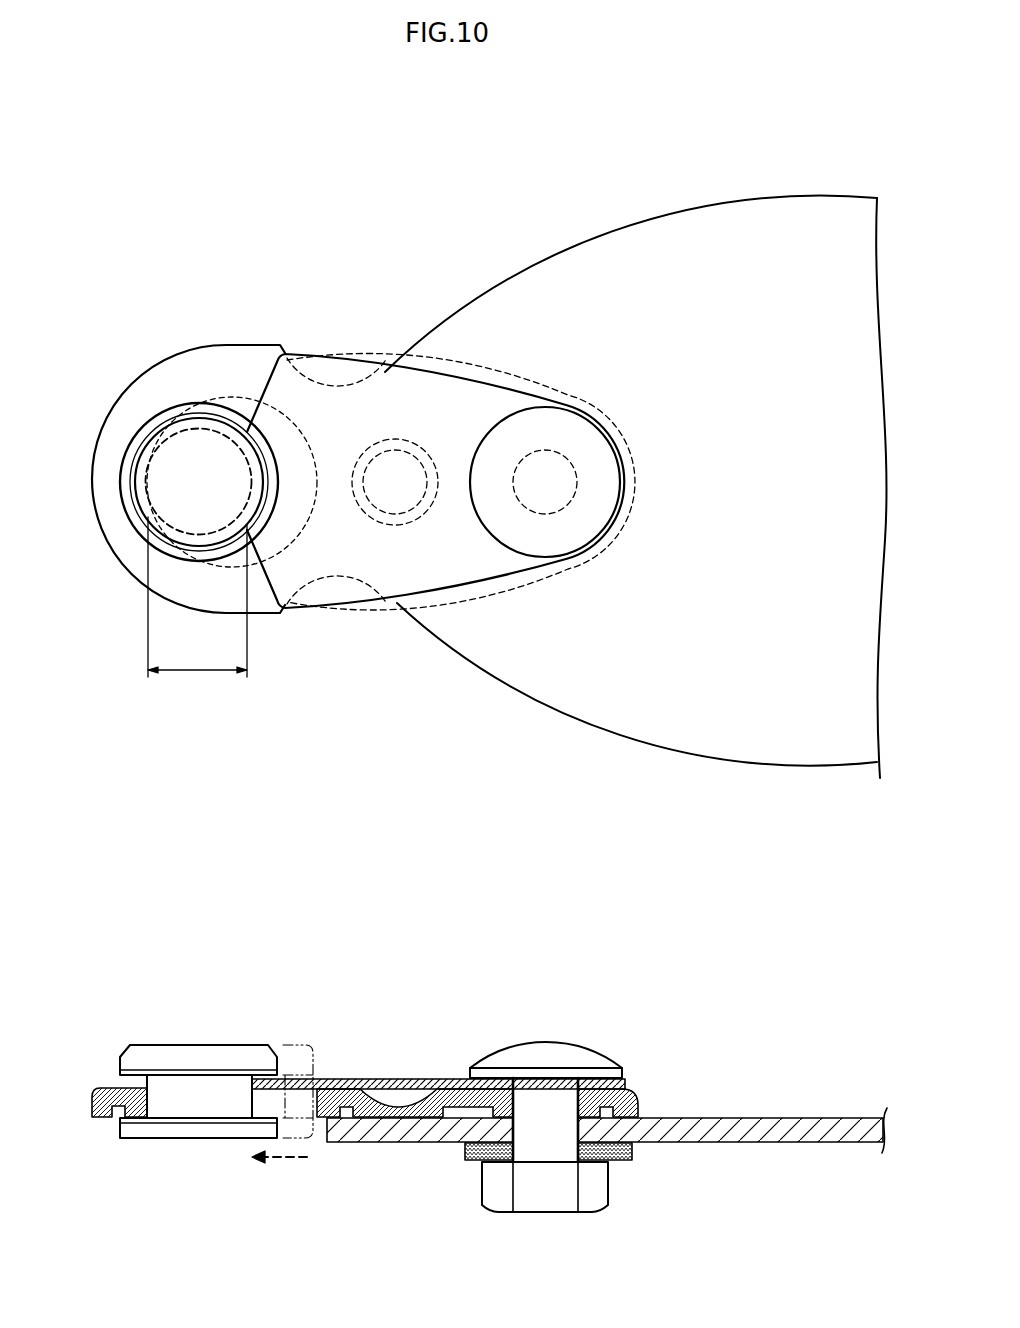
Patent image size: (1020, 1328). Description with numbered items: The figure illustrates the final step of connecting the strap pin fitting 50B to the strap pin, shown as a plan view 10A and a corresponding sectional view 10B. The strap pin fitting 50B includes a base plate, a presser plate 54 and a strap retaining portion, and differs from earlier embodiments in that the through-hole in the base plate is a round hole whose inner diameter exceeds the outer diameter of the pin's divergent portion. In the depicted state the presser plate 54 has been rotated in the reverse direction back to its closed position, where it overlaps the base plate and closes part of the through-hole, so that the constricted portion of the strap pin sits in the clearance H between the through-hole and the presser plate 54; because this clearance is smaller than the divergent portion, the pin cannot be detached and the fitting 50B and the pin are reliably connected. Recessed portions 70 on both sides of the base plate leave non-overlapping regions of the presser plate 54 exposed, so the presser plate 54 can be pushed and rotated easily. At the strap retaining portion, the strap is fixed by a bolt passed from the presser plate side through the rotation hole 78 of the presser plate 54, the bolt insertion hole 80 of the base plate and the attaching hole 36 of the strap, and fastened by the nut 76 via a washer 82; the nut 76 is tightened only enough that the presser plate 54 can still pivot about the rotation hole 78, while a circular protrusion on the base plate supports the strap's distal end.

The plan view of the closed position 10A is at (155, 180).
The sectional view of the closed position 10B is at (155, 918).
The attaching hole 36 is at (527, 1130).
The strap pin fitting 50B is at (322, 282).
The presser plate 54 is at (482, 573).
The recessed portions 70 is at (352, 385).
The nut 76 is at (547, 1203).
The rotation hole 78 is at (522, 1078).
The bolt insertion hole 80 is at (570, 1100).
The washer 82 is at (630, 1155).